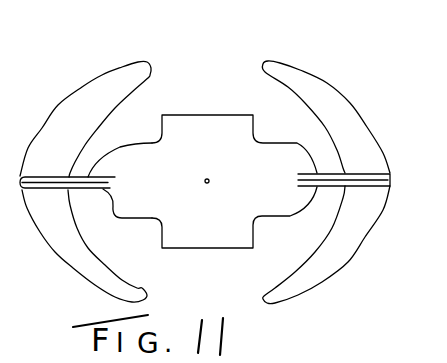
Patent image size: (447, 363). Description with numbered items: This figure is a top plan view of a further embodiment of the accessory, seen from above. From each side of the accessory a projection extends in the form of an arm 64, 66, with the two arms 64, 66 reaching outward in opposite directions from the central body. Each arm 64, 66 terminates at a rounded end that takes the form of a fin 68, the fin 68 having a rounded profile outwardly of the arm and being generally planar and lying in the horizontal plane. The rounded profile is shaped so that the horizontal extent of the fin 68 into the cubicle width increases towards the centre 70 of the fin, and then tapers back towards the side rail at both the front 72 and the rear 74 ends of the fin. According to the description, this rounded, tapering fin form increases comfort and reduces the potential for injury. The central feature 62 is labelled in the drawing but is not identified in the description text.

The central hub body 62 is at (207, 129).
The arm 64 is at (132, 158).
The arm 66 is at (56, 178).
The fin 68 is at (63, 247).
The centre of the fin 70 is at (388, 174).
The front end of the fin 72 is at (268, 303).
The rear end of the fin 74 is at (270, 61).